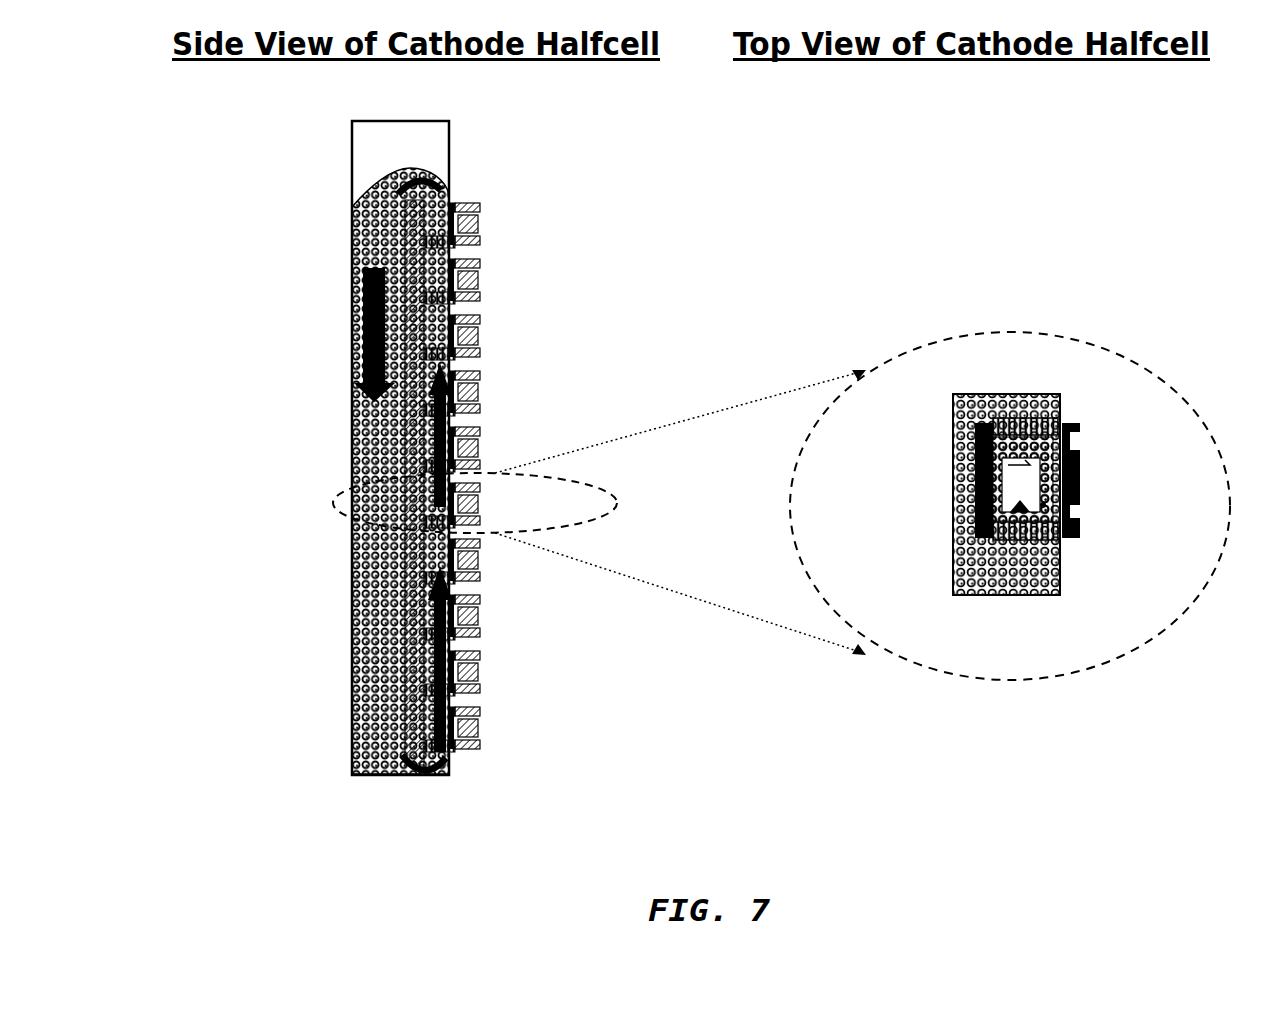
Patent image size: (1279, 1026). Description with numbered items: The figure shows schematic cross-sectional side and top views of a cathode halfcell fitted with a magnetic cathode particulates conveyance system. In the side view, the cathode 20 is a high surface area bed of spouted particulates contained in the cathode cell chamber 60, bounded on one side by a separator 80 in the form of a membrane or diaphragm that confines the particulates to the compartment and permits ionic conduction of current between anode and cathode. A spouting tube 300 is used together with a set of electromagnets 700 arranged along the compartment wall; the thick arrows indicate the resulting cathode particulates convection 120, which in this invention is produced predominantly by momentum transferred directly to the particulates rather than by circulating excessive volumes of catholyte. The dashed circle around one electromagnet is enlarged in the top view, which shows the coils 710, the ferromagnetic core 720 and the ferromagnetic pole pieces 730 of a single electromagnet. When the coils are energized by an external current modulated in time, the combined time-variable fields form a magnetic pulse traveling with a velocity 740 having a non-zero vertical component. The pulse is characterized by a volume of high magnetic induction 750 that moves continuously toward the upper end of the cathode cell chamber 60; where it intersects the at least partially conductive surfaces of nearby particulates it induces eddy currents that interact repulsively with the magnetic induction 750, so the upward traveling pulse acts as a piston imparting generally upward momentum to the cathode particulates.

The cathode cell chamber 60 is at (355, 150).
The cathode particulates convection 120 is at (428, 422).
The cathode 20 is at (352, 660).
The separator 80 is at (352, 727).
The electromagnets 700 is at (790, 503).
The spouting tube 300 is at (450, 312).
The ferromagnetic core 720 is at (975, 430).
The ferromagnetic pole pieces 730 is at (975, 482).
The coils 710 is at (975, 535).
The magnetic induction 750 is at (1021, 540).
The velocity 740 is at (490, 703).